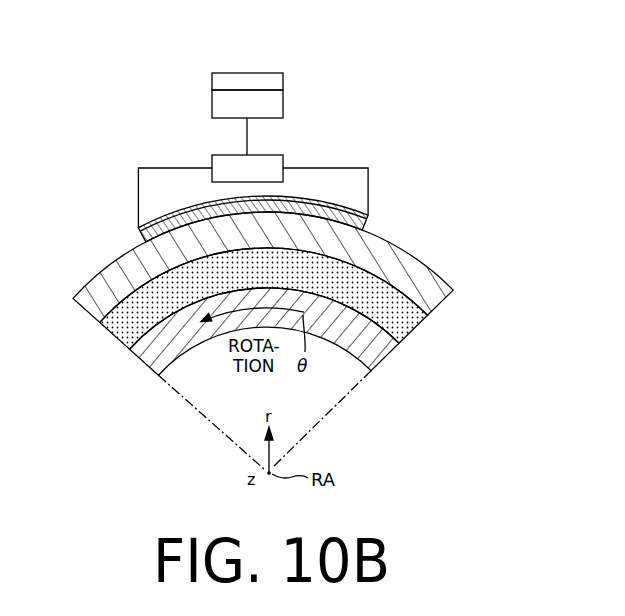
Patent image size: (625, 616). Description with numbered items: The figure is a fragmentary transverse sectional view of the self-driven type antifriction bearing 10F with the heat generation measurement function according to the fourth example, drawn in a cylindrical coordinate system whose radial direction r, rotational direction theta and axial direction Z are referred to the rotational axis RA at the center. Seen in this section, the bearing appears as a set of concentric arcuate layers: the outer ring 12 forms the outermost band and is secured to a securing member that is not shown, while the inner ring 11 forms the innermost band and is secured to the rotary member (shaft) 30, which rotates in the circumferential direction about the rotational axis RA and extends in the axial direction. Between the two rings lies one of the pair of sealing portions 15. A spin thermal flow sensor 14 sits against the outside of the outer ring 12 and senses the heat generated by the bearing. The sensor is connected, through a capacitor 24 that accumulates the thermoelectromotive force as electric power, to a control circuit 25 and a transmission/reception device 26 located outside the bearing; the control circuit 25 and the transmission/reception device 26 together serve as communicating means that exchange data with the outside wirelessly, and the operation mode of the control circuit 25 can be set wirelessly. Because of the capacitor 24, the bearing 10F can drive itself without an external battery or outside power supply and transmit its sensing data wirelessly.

The self-driven type antifriction bearing with heat generation measurement function 10F is at (427, 80).
The inner ring 11 is at (377, 348).
The outer ring 12 is at (400, 223).
The spin thermal flow sensor 14 is at (320, 198).
The sealing portion 15 is at (140, 297).
The capacitor 24 is at (233, 155).
The control circuit 25 is at (222, 100).
The transmission/reception device 26 is at (220, 80).
The rotary member (shaft) 30 is at (237, 405).